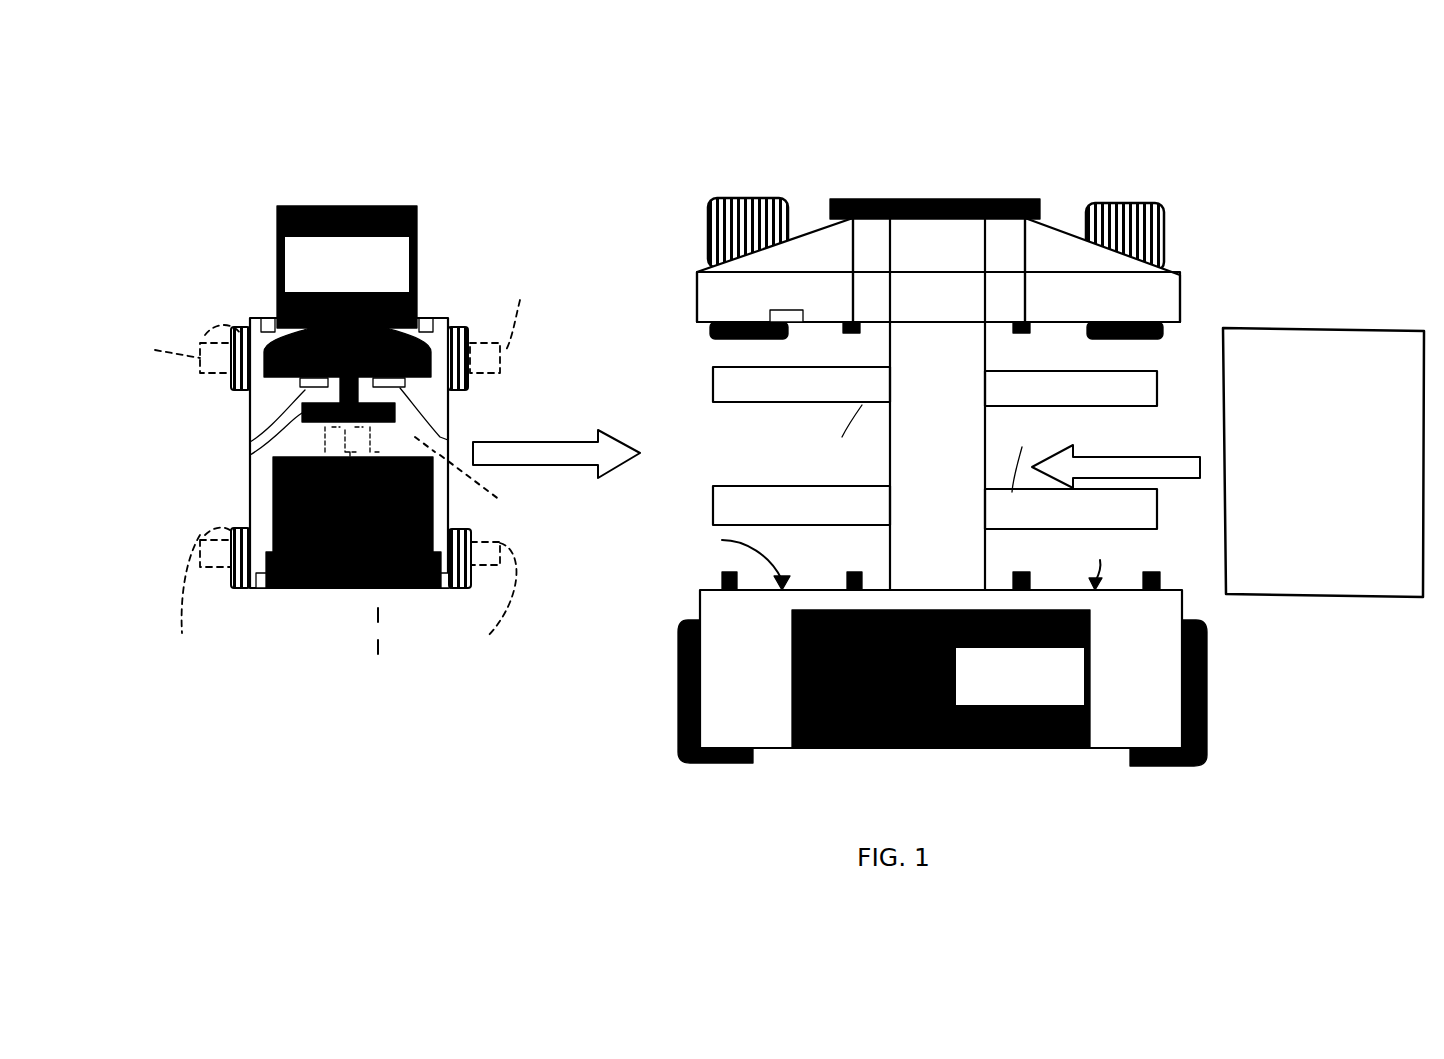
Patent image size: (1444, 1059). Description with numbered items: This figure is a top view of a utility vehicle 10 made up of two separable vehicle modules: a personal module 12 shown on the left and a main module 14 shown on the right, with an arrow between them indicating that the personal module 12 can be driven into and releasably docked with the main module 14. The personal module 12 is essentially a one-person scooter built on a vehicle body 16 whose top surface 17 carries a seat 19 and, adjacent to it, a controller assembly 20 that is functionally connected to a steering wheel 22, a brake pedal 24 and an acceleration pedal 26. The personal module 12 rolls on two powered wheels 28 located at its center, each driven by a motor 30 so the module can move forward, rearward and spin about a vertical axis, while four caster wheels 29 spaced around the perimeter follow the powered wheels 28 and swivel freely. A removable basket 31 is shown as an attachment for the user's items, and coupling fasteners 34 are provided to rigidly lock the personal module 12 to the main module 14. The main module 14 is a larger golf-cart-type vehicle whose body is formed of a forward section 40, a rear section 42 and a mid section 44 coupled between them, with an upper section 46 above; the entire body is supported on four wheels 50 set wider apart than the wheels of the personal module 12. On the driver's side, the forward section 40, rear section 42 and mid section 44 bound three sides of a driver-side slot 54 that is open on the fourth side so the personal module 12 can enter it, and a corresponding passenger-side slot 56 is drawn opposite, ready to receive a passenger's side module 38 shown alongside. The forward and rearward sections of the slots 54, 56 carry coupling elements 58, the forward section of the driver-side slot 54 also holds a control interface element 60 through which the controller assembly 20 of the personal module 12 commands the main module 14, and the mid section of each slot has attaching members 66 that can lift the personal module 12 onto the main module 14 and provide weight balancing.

The utility vehicle 10 is at (1320, 96).
The personal module 12 is at (272, 203).
The main module 14 is at (705, 192).
The vehicle body 16 is at (433, 325).
The top surface 17 is at (455, 410).
The seat 19 is at (295, 588).
The controller assembly 20 is at (308, 390).
The steering wheel 22 is at (315, 420).
The brake pedal 24 is at (310, 413).
The acceleration pedal 26 is at (438, 440).
The powered wheels 28 is at (483, 478).
The caster wheels 29 is at (240, 330).
The motor 30 is at (373, 658).
The basket 31 is at (350, 206).
The coupling fasteners 34 is at (265, 320).
The passenger's side module 38 is at (1398, 325).
The forward section 40 is at (1047, 240).
The rear section 42 is at (773, 732).
The mid section 44 is at (985, 352).
The upper section 46 is at (933, 237).
The wheels 50 is at (760, 200).
The driver-side slot 54 is at (722, 554).
The slot 56 is at (1107, 562).
The coupling elements 58 is at (730, 338).
The control interface element 60 is at (795, 323).
The attaching members 66 is at (865, 486).